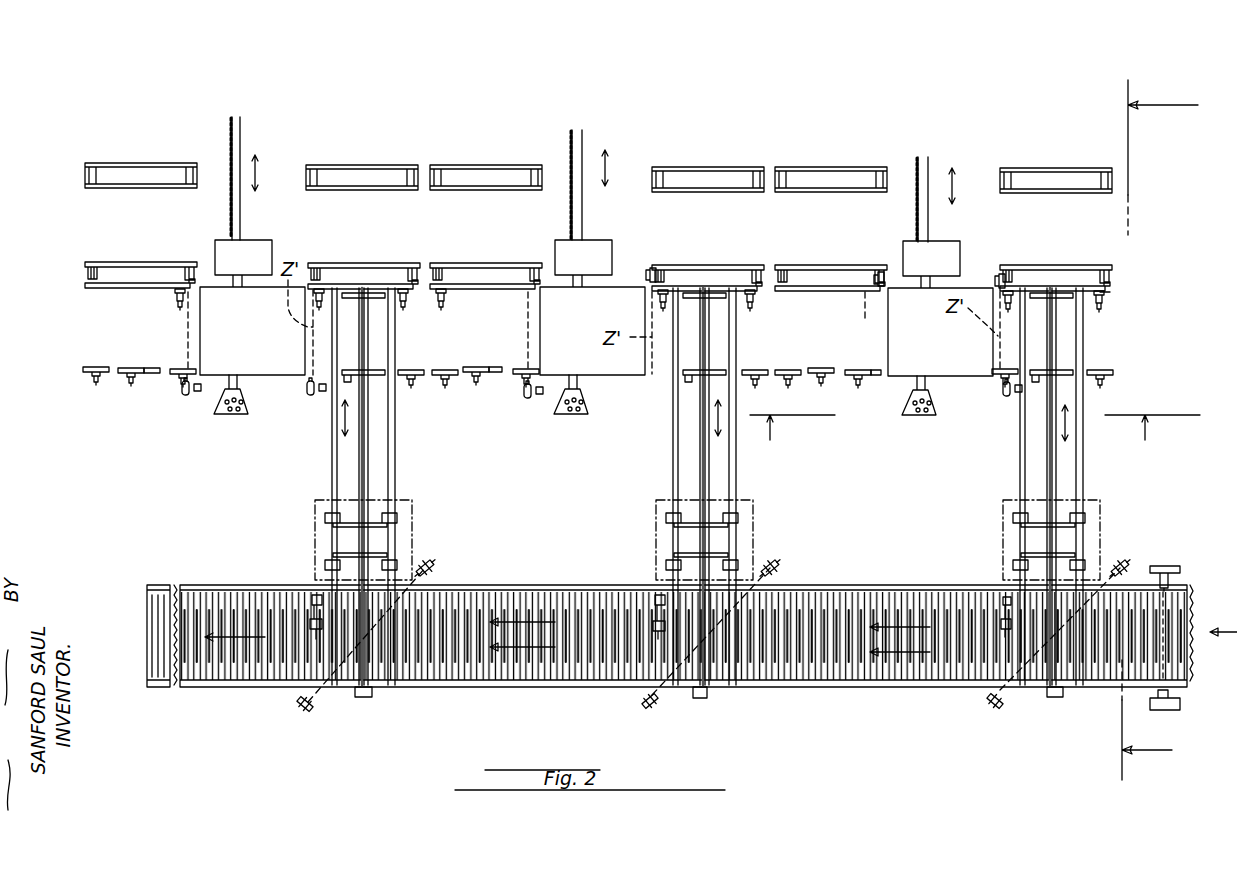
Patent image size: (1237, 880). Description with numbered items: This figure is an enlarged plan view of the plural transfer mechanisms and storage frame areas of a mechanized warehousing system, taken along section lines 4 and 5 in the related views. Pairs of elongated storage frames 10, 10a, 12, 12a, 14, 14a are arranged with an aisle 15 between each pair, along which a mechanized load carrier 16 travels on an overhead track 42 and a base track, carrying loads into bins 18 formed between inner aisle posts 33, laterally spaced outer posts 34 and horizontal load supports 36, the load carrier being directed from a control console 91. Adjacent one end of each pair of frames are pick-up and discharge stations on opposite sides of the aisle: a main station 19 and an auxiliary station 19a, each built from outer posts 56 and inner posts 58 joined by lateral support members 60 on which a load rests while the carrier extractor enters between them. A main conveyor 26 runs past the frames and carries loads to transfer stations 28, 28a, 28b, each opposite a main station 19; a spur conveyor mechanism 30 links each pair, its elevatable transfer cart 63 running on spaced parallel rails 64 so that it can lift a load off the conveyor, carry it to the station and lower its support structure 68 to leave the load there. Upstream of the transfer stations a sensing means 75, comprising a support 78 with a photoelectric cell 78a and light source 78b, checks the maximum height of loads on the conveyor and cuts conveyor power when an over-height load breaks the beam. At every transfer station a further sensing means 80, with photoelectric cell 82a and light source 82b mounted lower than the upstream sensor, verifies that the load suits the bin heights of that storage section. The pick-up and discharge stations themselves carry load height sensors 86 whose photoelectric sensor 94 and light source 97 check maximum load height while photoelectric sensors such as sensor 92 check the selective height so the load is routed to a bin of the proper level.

The section line 4- 4 is at (1160, 430).
The section line 5- 5 is at (975, 432).
The storage frame 10 is at (1045, 162).
The storage frame 10a is at (848, 150).
The storage frame 12 is at (727, 158).
The storage frame 12a is at (504, 140).
The storage frame 14 is at (358, 140).
The storage frame 14a is at (146, 156).
The aisle 15 is at (970, 176).
The load carrier apparatus 16 is at (967, 345).
The bins 18 is at (1075, 234).
The main pick-up and discharge station 19 is at (1104, 370).
The auxiliary pick-up and discharge station 19a is at (831, 364).
The main conveyor mechanism 26 is at (840, 700).
The transfer station 28 is at (1060, 670).
The transfer station 28a is at (714, 666).
The transfer station 28b is at (350, 626).
The spur conveyor mechanism 30 is at (1020, 492).
The aisle posts 33 is at (1000, 183).
The outer posts 34 is at (774, 157).
The load supports 36 is at (1057, 202).
The overhead track 42 is at (918, 224).
The outer posts 56 is at (1110, 296).
The inner posts 58 is at (834, 388).
The lateral support members 60 is at (1065, 366).
The transfer cart 63 is at (1060, 526).
The rails 64 is at (1088, 448).
The support structure 68 is at (949, 592).
The sensing means 75 is at (1162, 558).
The support 78 is at (1164, 714).
The photoelectric cell 78a is at (1176, 574).
The light source 78b is at (1176, 700).
The sensing means 80 is at (992, 714).
The photoelectric cell 82a is at (985, 700).
The light source 82b is at (1125, 564).
The load height sensor 86 is at (1010, 430).
The control console 91 is at (895, 415).
The photoelectric sensor 92 is at (994, 388).
The photoelectric sensor 94 is at (567, 243).
The light source 97 is at (180, 403).